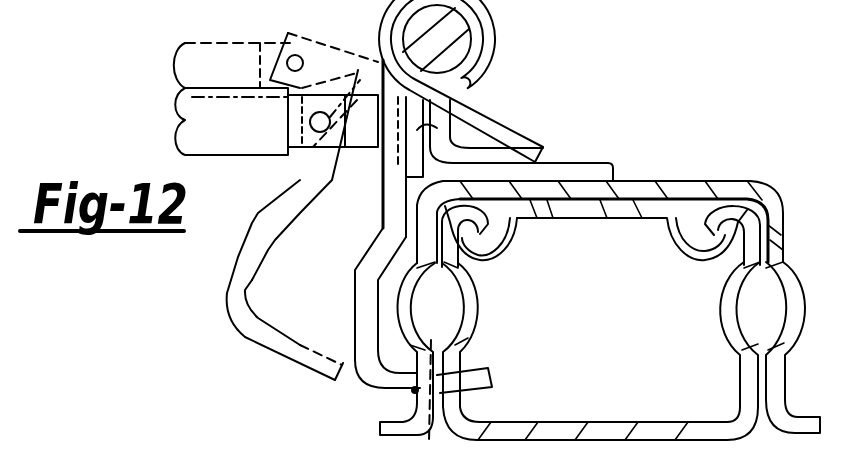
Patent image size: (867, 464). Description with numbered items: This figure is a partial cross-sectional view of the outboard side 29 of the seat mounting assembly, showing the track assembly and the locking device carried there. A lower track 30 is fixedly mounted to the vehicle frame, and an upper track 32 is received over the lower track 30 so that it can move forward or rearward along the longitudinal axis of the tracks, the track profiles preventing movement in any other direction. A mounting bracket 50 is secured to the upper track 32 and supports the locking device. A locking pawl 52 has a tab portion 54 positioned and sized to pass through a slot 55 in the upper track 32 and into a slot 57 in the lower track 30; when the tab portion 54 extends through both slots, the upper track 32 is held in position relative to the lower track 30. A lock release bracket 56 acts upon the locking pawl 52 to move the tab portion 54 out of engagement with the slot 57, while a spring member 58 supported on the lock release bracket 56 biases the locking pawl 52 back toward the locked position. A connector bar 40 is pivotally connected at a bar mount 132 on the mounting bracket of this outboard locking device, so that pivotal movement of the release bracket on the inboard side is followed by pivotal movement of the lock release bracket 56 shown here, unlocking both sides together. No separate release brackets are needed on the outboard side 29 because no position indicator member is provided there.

The outboard side 29 is at (668, 173).
The lower track 30 is at (700, 432).
The upper track 32 is at (743, 188).
The connector bar 40 is at (228, 137).
The mounting bracket 50 is at (565, 172).
The locking pawl 52 is at (364, 318).
The tab portion 54 is at (492, 374).
The slot 55 is at (412, 393).
The lock release bracket 56 is at (477, 112).
The slot 57 is at (431, 402).
The spring member 58 is at (380, 207).
The bar mount 132 is at (357, 67).